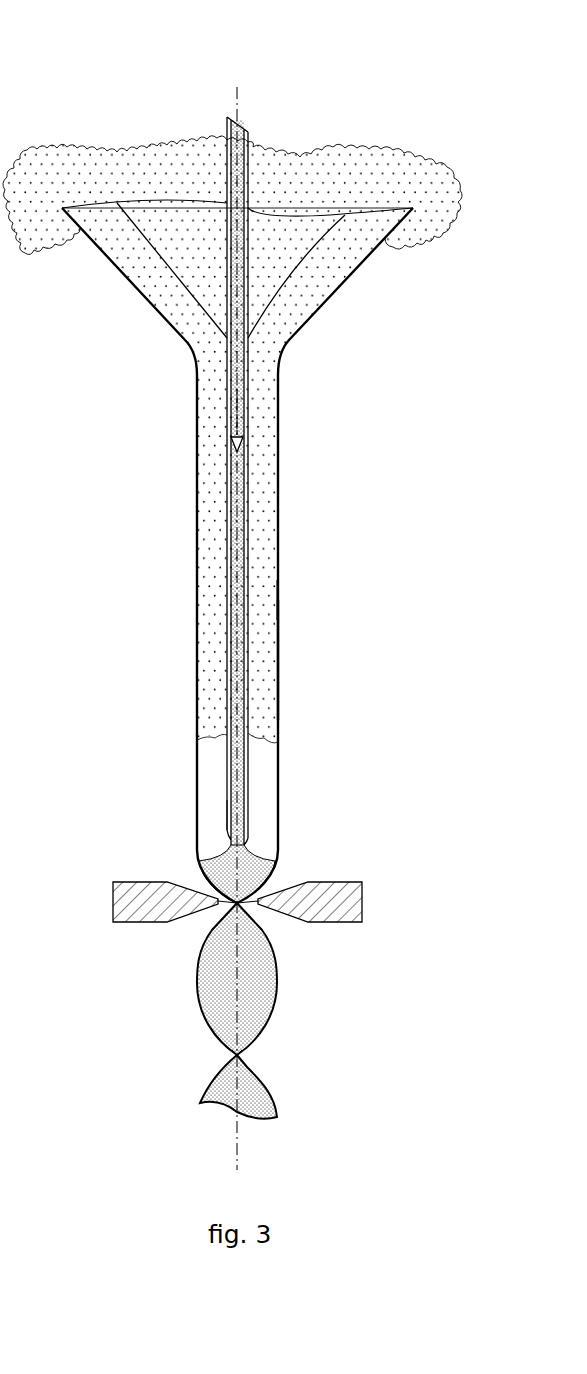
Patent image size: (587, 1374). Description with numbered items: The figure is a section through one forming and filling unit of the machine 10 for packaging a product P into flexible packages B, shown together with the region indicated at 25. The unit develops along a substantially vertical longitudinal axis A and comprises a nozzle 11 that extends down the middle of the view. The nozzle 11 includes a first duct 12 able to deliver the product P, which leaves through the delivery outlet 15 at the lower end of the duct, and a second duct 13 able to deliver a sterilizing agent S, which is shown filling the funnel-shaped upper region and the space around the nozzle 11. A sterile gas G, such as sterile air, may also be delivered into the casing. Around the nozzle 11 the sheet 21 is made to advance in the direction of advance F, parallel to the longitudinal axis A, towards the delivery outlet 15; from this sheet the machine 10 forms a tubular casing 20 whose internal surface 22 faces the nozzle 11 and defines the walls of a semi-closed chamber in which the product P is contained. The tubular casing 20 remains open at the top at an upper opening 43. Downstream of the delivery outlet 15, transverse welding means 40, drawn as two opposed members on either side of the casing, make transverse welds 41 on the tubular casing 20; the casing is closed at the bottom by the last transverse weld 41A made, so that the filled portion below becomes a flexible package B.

The machine 10 is at (322, 55).
The feeding device 25 is at (367, 92).
The nozzle 11 is at (267, 129).
The first duct 12 is at (228, 790).
The second duct 13 is at (273, 323).
The delivery outlet 15 is at (250, 843).
The tubular casing 20 is at (284, 556).
The sheet 21 is at (279, 660).
The internal surface 22 is at (276, 598).
The transverse welding means 40 is at (127, 907).
The transverse weld 41 is at (240, 1058).
The last transverse weld 41A is at (242, 905).
The upper opening 43 is at (350, 268).
The longitudinal axis A is at (236, 97).
The sterilizing agent S is at (37, 175).
The direction of advance F is at (235, 402).
The sterile gas G is at (215, 826).
The product P is at (235, 873).
The flexible package B is at (214, 982).